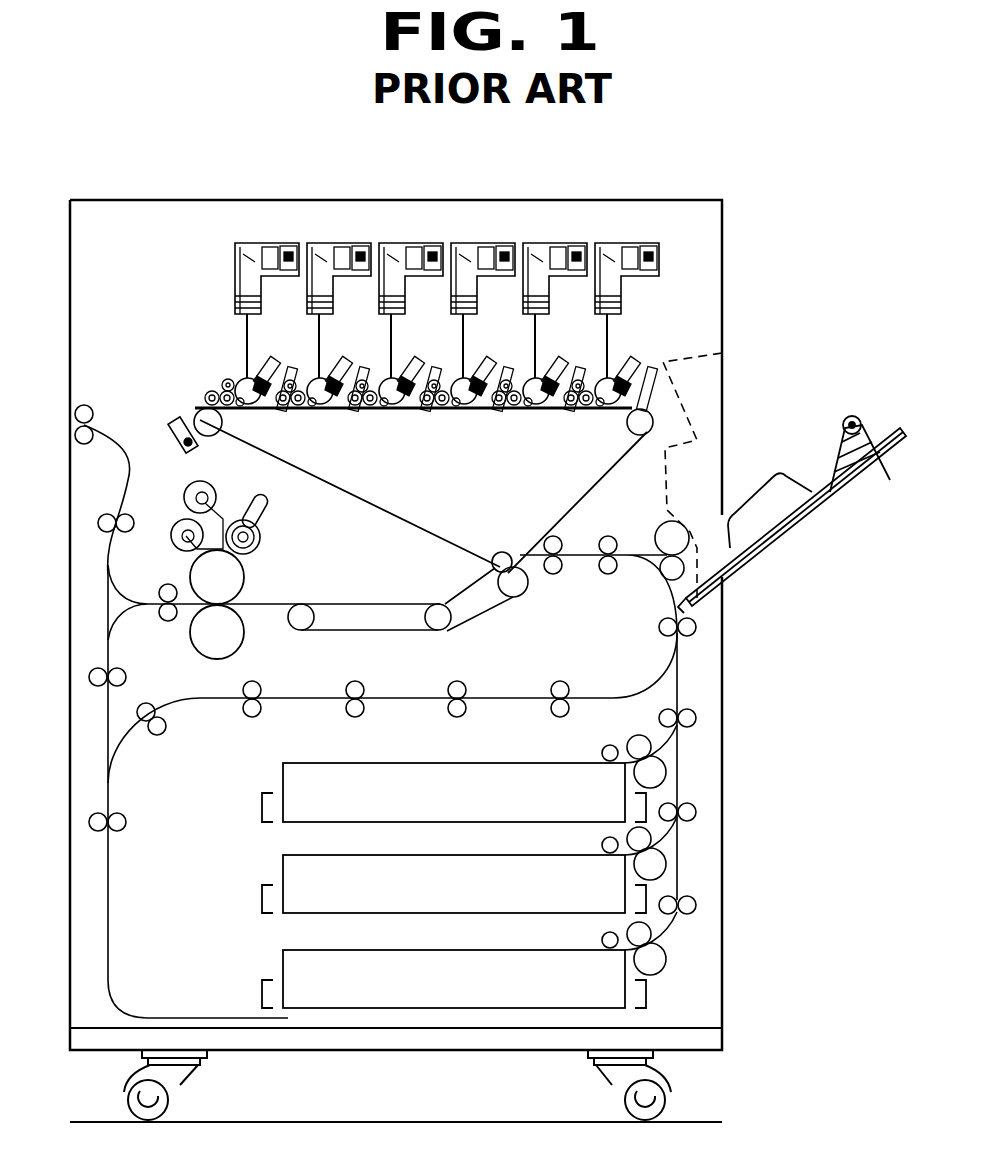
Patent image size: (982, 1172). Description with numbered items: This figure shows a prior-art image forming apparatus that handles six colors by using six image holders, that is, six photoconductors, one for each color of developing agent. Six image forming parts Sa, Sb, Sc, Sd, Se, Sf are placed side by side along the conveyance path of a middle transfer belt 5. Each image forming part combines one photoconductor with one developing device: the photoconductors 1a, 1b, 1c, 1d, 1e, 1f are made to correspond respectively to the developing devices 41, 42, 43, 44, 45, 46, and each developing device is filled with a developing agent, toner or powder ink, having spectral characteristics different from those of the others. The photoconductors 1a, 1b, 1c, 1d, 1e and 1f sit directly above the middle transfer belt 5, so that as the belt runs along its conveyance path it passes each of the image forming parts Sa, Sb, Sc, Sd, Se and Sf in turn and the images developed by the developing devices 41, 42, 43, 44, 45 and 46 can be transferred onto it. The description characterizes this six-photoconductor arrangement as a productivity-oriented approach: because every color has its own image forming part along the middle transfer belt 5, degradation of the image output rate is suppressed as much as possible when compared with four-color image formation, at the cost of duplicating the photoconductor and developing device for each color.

The developing device 41 is at (565, 378).
The developing device 42 is at (497, 378).
The developing device 43 is at (427, 378).
The developing device 44 is at (357, 378).
The developing device 45 is at (290, 378).
The developing device 46 is at (212, 378).
The photoconductor 1a is at (594, 410).
The photoconductor 1b is at (522, 410).
The photoconductor 1c is at (450, 410).
The photoconductor 1d is at (377, 410).
The photoconductor 1e is at (310, 410).
The photoconductor 1f is at (233, 435).
The image forming part Sa is at (607, 416).
The image forming part Sb is at (536, 416).
The image forming part Sc is at (464, 416).
The image forming part Sd is at (392, 416).
The image forming part Se is at (322, 416).
The image forming part Sf is at (248, 416).
The middle transfer belt 5 is at (418, 535).